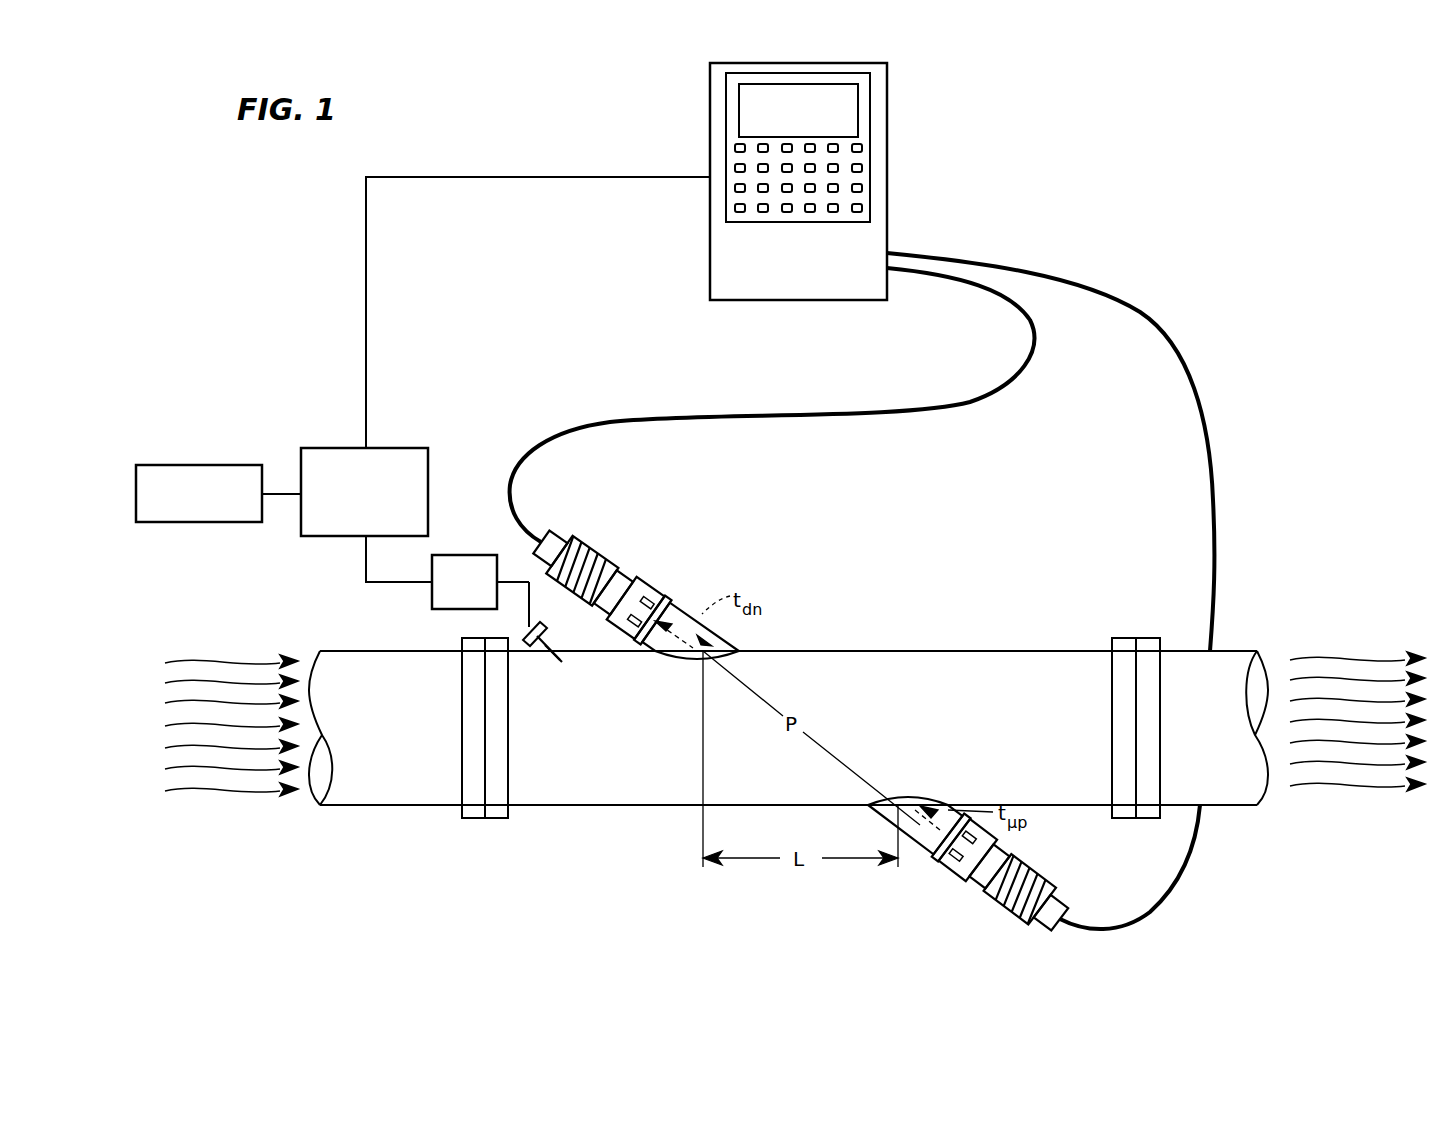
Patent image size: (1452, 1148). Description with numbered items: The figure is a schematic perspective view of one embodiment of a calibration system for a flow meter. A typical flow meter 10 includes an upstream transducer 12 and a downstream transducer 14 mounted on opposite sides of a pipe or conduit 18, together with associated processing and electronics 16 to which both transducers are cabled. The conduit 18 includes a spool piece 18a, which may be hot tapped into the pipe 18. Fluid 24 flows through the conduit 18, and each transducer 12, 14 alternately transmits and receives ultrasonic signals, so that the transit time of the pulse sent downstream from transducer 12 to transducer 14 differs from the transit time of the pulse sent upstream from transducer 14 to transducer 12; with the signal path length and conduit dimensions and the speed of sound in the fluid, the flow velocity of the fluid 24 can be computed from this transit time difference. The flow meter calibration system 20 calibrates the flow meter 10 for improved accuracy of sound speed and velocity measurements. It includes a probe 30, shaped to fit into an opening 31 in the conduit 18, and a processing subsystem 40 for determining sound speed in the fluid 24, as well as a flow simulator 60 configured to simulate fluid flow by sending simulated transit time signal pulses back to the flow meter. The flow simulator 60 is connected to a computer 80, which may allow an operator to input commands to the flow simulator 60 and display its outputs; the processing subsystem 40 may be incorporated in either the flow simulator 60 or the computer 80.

The flow meter 10 is at (1122, 266).
The upstream transducer 12 is at (672, 606).
The downstream transducer 14 is at (980, 832).
The processing and electronics 16 is at (887, 173).
The pipe or conduit 18 is at (425, 806).
The spool piece 18a is at (525, 807).
The flow meter calibration system 20 is at (473, 435).
The fluid 24 is at (224, 796).
The probe 30 is at (566, 618).
The opening 31 is at (572, 663).
The processing subsystem 40 is at (480, 582).
The flow simulator 60 is at (396, 448).
The computer 80 is at (191, 465).